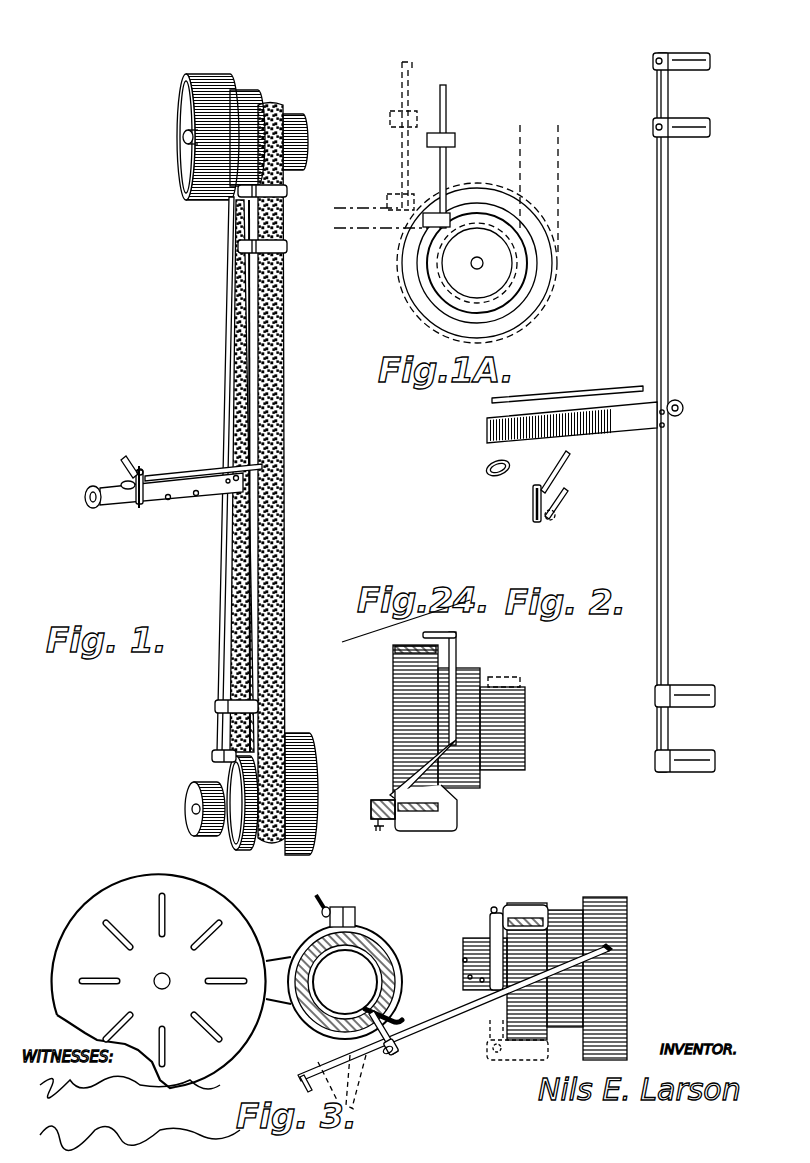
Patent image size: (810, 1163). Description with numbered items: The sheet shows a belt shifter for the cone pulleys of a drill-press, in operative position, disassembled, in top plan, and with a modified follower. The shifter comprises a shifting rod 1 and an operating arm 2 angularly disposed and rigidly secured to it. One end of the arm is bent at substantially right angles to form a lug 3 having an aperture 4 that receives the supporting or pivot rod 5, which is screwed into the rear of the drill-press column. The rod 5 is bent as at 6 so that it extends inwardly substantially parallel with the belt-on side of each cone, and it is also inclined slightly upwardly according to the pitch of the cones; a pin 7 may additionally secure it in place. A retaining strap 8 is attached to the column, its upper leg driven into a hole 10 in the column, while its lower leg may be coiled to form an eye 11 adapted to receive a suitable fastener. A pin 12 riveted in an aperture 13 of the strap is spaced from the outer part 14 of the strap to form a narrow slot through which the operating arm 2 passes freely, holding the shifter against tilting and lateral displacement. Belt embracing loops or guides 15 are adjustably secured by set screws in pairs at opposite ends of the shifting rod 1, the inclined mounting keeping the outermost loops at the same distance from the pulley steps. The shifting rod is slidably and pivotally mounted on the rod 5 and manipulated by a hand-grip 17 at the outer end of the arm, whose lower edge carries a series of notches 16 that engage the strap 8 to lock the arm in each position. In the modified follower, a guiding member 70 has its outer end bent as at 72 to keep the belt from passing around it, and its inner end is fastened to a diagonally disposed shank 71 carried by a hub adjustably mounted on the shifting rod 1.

In FIG. 1, the shifting rod 1 is at (236, 392).
In FIG. 2, the shifting rod 1 is at (670, 352).
In FIG. 24, the shifting rod 1 is at (372, 810).
In FIG. 3, the shifting rod 1 is at (490, 942).
In FIG. 1, the operating arm 2 is at (213, 492).
In FIG. 2, the operating arm 2 is at (630, 430).
In FIG. 3, the operating arm 2 is at (443, 1022).
In FIG. 1, the lug 3 is at (234, 477).
In FIG. 2, the lug 3 is at (666, 420).
In FIG. 3, the lug 3 is at (462, 960).
In FIG. 1, the aperture 4 is at (226, 480).
In FIG. 2, the aperture 4 is at (684, 408).
In FIG. 3, the aperture 4 is at (478, 980).
In FIG. 1, the supporting or pivot rod 5 is at (178, 475).
In FIG. 2, the supporting or pivot rod 5 is at (560, 396).
In FIG. 3, the supporting or pivot rod 5 is at (612, 955).
In FIG. 3, the bend 6 is at (400, 1020).
In FIG. 3, the pin 7 is at (466, 977).
In FIG. 1, the retaining strap 8 is at (139, 474).
In FIG. 2, the retaining strap 8 is at (533, 514).
In FIG. 3, the retaining strap 8 is at (390, 1058).
In FIG. 3, the hole 10 is at (360, 1024).
In FIG. 1, the washer 11 is at (124, 486).
In FIG. 2, the washer 11 is at (556, 518).
In FIG. 3, the washer 11 is at (387, 1052).
In FIG. 1, the pin 12 is at (128, 470).
In FIG. 2, the pin 12 is at (550, 493).
In FIG. 1, the aperture 13 is at (144, 470).
In FIG. 2, the aperture 13 is at (540, 488).
In FIG. 3, the aperture 13 is at (396, 1048).
In FIG. 1, the outer part of the strap 14 is at (134, 500).
In FIG. 2, the outer part of the strap 14 is at (533, 500).
In FIG. 1, the loops or guides 15 is at (288, 191).
In FIG. 2, the loops or guides 15 is at (686, 71).
In FIG. 24, the loops or guides 15 is at (458, 818).
In FIG. 3, the loops or guides 15 is at (526, 905).
In FIG. 1, the notches 16 is at (196, 496).
In FIG. 3, the notches 16 is at (352, 1096).
In FIG. 1, the hand-grip 17 is at (93, 509).
In FIG. 2, the hand-grip 17 is at (486, 473).
In FIG. 3, the hand-grip 17 is at (298, 1080).
In FIG. 24, the guiding member 70 is at (457, 654).
In FIG. 24, the diagonally disposed shank 71 is at (390, 794).
In FIG. 24, the bent outer end 72 is at (456, 633).